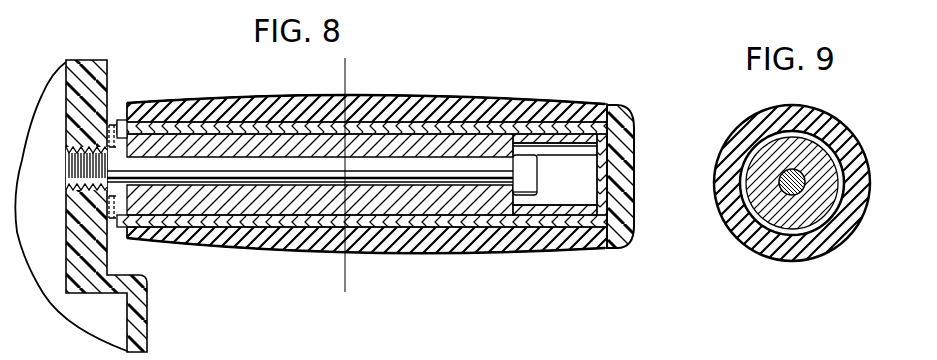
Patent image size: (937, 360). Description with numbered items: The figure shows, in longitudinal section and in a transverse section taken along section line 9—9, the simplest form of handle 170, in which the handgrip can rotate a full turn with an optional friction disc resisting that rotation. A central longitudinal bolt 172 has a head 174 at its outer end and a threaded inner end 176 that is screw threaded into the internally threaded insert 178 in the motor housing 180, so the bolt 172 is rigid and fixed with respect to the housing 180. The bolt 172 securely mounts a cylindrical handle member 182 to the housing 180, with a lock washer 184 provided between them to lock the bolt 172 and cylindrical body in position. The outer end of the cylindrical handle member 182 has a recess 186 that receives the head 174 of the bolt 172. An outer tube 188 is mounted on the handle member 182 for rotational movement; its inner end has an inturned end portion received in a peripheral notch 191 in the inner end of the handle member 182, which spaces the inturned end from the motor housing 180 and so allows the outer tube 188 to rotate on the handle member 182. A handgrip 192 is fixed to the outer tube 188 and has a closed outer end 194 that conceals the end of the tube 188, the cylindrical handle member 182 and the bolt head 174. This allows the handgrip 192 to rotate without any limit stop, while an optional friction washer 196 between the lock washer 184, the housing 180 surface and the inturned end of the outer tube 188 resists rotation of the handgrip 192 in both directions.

In FIG. 8, the handle 170 is at (473, 95).
In FIG. 8, the central longitudinal bolt 172 is at (292, 186).
In FIG. 9, the central longitudinal bolt 172 is at (764, 255).
In FIG. 8, the head 174 is at (526, 156).
In FIG. 8, the threaded inner end 176 is at (68, 171).
In FIG. 8, the internally threaded insert 178 is at (67, 190).
In FIG. 8, the motor housing 180 is at (93, 66).
In FIG. 8, the cylindrical handle member 182 is at (456, 198).
In FIG. 9, the cylindrical handle member 182 is at (817, 243).
In FIG. 8, the lock washer 184 is at (113, 130).
In FIG. 8, the recess 186 is at (560, 200).
In FIG. 8, the outer tube 188 is at (566, 126).
In FIG. 9, the outer tube 188 is at (722, 206).
In FIG. 8, the peripheral notch 191 is at (162, 108).
In FIG. 8, the handgrip 192 is at (431, 106).
In FIG. 9, the handgrip 192 is at (742, 143).
In FIG. 8, the closed outer end 194 is at (628, 148).
In FIG. 8, the friction washer 196 is at (115, 232).
In FIG. 8, the section line 9— 9 is at (369, 61).